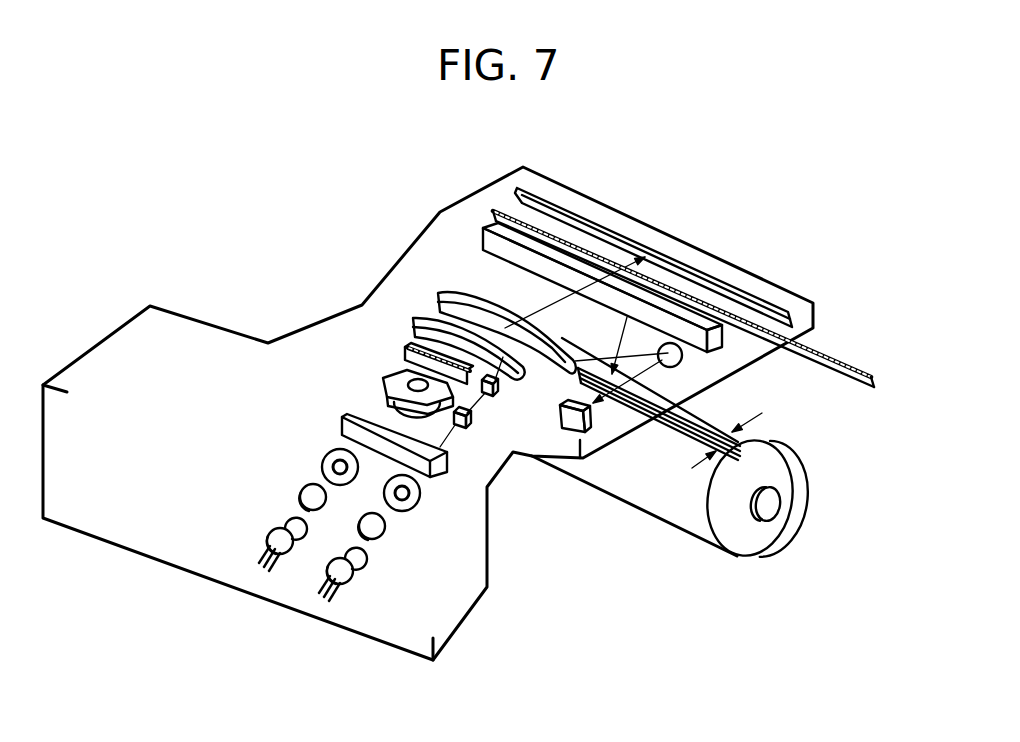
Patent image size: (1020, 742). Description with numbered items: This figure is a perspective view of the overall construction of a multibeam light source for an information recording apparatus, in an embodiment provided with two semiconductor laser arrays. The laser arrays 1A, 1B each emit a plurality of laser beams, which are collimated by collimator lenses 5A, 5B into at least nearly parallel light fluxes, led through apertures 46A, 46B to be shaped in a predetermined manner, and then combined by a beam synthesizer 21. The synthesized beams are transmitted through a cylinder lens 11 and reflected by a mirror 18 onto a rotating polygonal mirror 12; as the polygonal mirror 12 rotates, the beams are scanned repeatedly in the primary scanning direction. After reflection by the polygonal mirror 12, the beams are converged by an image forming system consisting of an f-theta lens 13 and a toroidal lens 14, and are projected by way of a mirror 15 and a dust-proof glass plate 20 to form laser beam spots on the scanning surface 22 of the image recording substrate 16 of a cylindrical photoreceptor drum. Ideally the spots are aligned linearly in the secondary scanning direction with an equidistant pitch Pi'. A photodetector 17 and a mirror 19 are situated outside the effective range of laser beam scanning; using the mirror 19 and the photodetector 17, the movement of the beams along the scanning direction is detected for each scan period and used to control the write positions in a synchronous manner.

The laser array 1A is at (362, 580).
The laser array 1B is at (268, 525).
The collimator lens 5A is at (388, 543).
The collimator lens 5B is at (303, 490).
The aperture 46A is at (420, 495).
The aperture 46B is at (337, 457).
The cylinder lens 11 is at (460, 429).
The rotating polygonal mirror 12 is at (403, 378).
The f-theta lens 13 is at (438, 338).
The toroidal lens 14 is at (723, 338).
The mirror 15 is at (697, 242).
The image recording substrate 16 is at (762, 540).
The photodetector 17 is at (590, 418).
The mirror 18 is at (490, 394).
The mirror 19 is at (683, 358).
The dust-proof glass plate 20 is at (828, 350).
The beam synthesizer 21 is at (372, 413).
The scanning surface 22 is at (748, 428).
The equidistant pitch Pi' is at (688, 473).